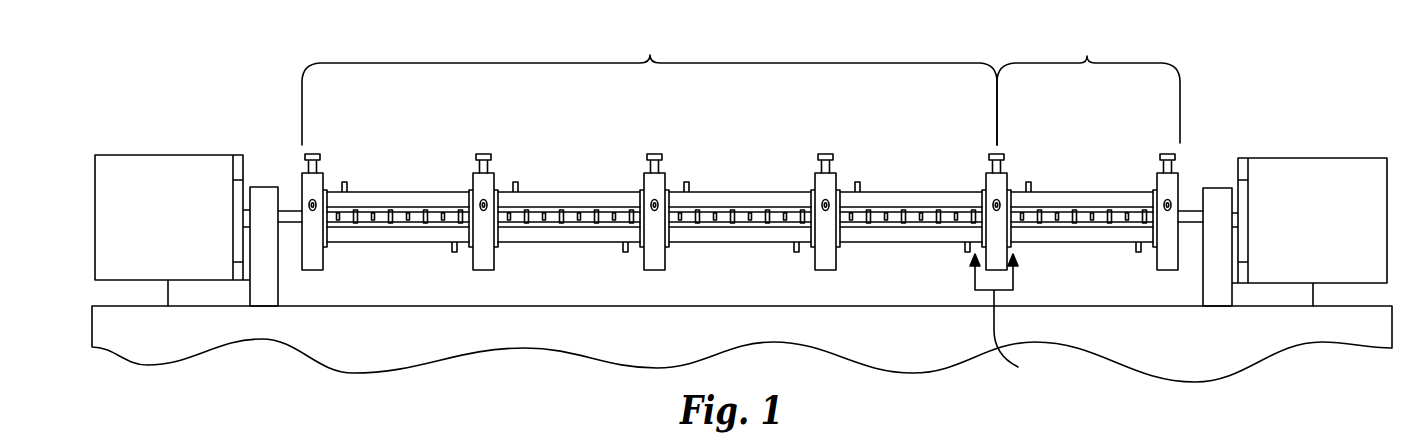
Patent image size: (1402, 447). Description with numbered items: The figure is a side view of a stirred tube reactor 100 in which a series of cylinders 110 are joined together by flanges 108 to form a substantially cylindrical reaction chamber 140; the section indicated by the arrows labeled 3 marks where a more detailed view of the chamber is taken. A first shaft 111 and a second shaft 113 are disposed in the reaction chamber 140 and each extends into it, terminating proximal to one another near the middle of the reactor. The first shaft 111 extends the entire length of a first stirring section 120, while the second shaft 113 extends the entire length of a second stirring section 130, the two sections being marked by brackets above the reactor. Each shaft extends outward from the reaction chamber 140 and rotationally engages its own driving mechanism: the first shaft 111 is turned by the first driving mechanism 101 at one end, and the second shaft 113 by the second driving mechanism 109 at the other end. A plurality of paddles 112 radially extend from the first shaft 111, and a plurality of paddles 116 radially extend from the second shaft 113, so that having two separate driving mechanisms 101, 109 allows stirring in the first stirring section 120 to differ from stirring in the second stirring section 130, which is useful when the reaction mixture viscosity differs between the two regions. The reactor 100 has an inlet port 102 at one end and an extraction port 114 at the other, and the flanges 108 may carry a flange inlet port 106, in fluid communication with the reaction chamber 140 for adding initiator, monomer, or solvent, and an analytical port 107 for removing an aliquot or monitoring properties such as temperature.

The stirred tube reactor 100 is at (316, 370).
The first driving mechanism 101 is at (152, 155).
The inlet port 102 is at (313, 153).
The flange inlet port 106 is at (483, 153).
The analytical port 107 is at (315, 200).
The flange 108 is at (301, 184).
The second driving mechanism 109 is at (1311, 158).
The cylinder 110 is at (380, 205).
The first shaft 111 is at (557, 223).
The paddles 112 is at (732, 223).
The second shaft 113 is at (1076, 224).
The extraction port 114 is at (1166, 153).
The paddles 116 is at (1092, 221).
The first stirring section 120 is at (649, 86).
The second stirring section 130 is at (1088, 86).
The reaction chamber 140 is at (401, 227).
The section view direction (FIG. 3) 3 is at (1005, 322).